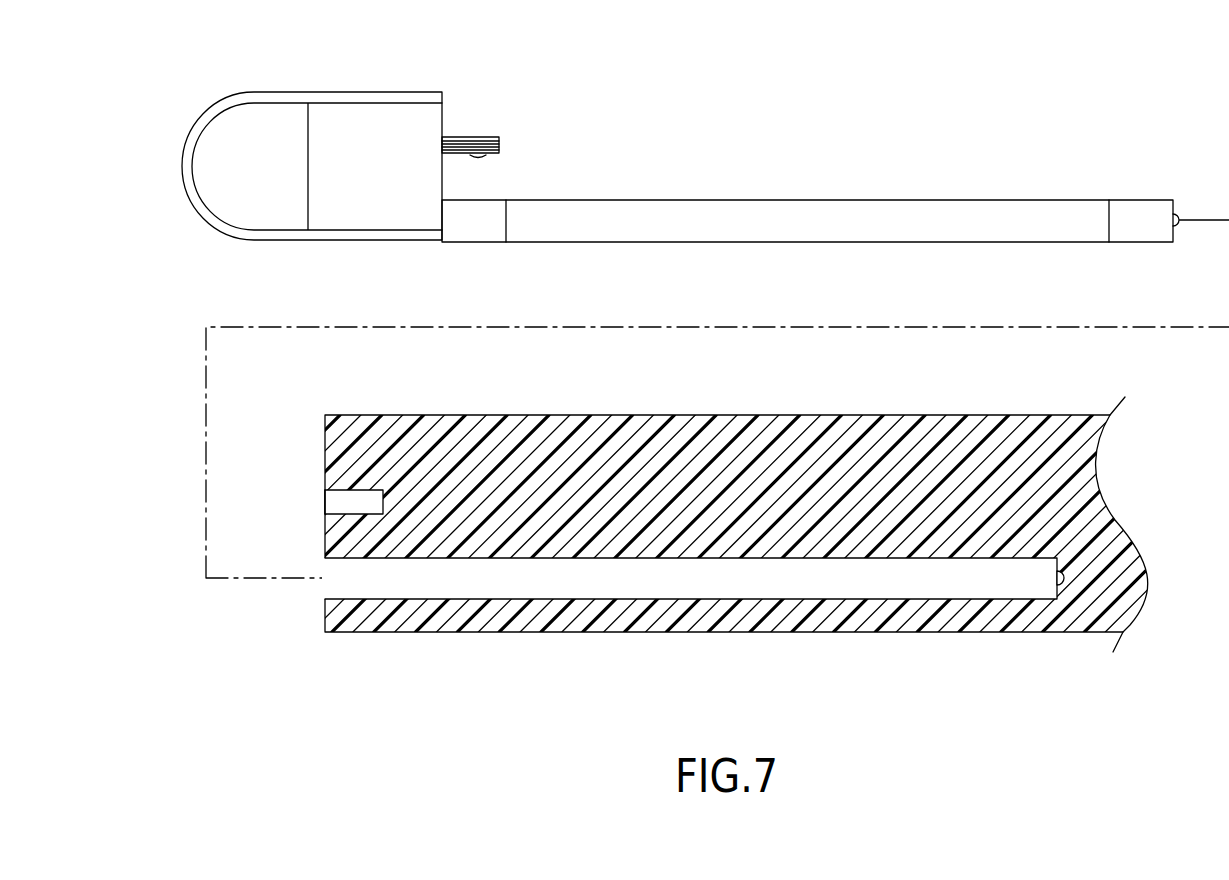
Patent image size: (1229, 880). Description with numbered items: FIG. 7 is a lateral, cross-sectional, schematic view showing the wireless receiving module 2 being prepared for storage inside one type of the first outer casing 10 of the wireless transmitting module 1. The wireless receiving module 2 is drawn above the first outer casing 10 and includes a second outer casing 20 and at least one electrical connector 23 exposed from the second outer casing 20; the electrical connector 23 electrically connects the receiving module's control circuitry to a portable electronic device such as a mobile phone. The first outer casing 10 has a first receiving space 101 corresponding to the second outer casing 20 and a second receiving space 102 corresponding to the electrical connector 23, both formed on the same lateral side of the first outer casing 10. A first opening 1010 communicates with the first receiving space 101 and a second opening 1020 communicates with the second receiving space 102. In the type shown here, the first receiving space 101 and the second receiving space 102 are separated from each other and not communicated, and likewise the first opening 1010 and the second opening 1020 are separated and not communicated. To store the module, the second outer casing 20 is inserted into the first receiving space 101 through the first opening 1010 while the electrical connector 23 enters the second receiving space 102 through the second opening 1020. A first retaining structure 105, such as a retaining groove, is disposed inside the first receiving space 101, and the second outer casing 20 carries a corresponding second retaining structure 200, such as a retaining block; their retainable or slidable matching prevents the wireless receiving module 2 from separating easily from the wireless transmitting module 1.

The wireless transmitting module 1 is at (676, 524).
The first outer casing 10 is at (933, 427).
The first receiving space 101 is at (689, 586).
The first opening 1010 is at (332, 588).
The second receiving space 102 is at (362, 500).
The second opening 1020 is at (328, 502).
The first retaining structure 105 is at (1073, 586).
The wireless receiving module 2 is at (370, 88).
The second outer casing 20 is at (983, 214).
The second retaining structure 200 is at (1181, 218).
The electrical connector 23 is at (472, 137).